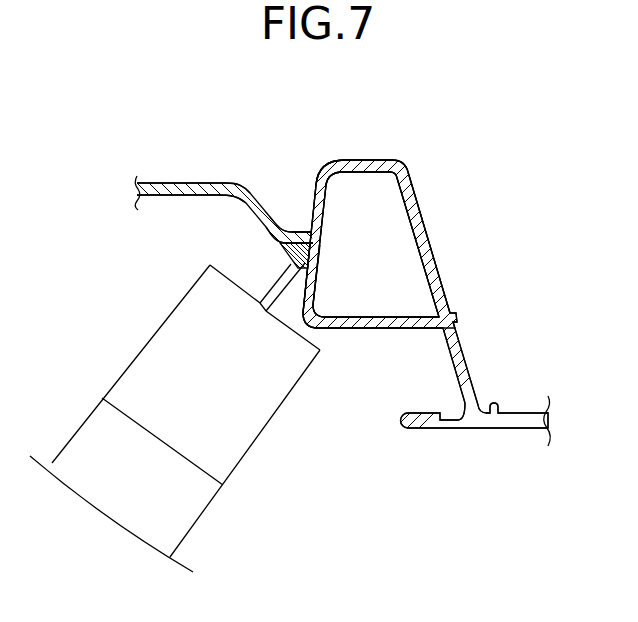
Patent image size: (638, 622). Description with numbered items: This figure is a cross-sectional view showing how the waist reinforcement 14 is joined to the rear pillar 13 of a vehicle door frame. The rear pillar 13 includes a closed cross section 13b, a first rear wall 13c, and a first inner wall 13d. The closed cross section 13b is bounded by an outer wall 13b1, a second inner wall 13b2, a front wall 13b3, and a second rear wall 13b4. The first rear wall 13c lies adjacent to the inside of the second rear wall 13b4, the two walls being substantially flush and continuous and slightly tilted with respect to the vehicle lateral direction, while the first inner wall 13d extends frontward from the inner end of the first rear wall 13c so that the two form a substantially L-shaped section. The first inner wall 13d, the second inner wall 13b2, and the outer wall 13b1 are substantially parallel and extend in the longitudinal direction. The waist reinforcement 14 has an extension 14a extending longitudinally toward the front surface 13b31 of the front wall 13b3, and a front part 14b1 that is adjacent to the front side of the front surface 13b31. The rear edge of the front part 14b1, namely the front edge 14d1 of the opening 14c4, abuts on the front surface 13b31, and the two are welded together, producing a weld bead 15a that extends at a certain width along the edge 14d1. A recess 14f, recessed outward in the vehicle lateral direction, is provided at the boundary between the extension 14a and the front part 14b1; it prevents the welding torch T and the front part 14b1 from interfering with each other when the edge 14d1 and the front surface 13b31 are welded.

The rear pillar 13 is at (338, 164).
The closed cross section 13b is at (407, 172).
The outer wall 13b1 is at (368, 167).
The second inner wall 13b2 is at (388, 330).
The front wall 13b3 is at (317, 200).
The front surface 13b31 is at (303, 292).
The second rear wall 13b4 is at (432, 242).
The first rear wall 13c is at (465, 358).
The first inner wall 13d is at (478, 429).
The waist reinforcement 14 is at (150, 183).
The extension 14a is at (187, 183).
The front part 14b1 is at (279, 231).
The recess 14f is at (181, 196).
The front edge 14d1 is at (312, 238).
The opening 14c4 is at (420, 275).
The weld bead 15a is at (284, 249).
The welding torch T is at (128, 366).